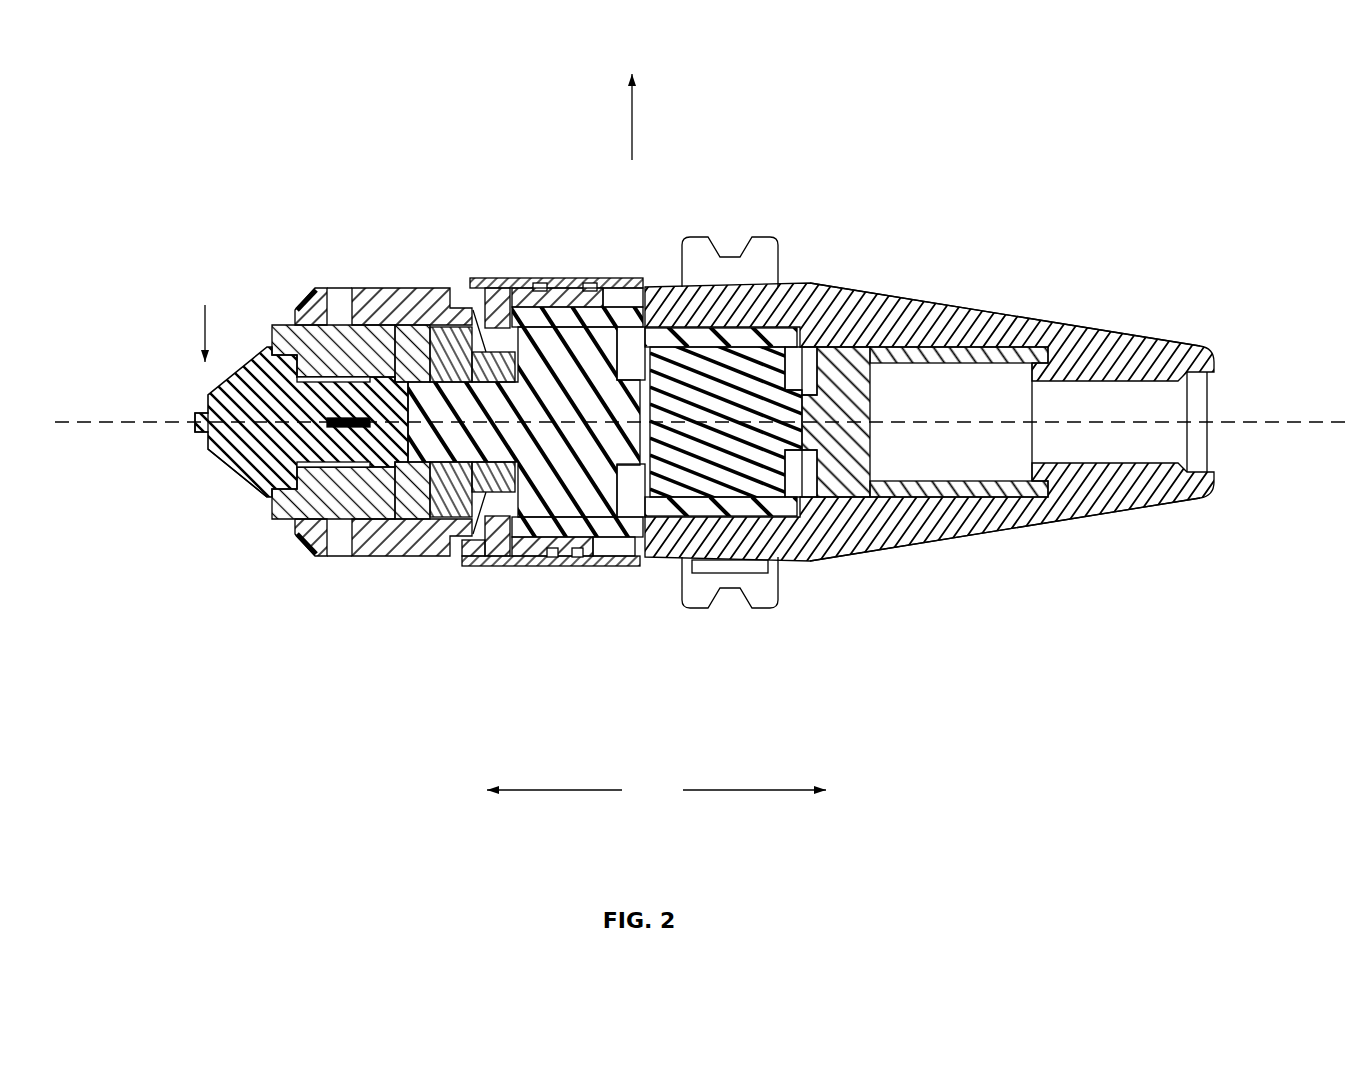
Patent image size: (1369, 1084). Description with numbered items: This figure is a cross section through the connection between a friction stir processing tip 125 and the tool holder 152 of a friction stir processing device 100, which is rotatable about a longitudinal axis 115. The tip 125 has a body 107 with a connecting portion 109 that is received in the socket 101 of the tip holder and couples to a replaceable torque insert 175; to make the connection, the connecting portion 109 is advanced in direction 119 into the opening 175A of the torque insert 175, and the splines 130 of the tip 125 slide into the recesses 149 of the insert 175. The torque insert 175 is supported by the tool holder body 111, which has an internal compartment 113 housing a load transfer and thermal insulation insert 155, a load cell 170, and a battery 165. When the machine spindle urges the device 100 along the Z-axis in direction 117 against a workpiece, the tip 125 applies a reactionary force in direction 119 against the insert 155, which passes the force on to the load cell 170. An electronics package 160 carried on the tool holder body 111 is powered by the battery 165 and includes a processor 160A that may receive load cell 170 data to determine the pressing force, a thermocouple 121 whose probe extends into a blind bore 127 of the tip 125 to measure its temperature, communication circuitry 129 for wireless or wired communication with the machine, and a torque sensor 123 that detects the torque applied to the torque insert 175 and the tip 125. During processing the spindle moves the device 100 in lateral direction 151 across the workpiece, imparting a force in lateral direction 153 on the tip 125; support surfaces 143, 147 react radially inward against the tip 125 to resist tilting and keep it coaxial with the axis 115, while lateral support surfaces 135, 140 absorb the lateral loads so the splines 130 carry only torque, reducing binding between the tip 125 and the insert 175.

The friction stir processing device 100 is at (705, 453).
The socket 101 is at (299, 458).
The body 107 is at (215, 447).
The connecting portion 109 is at (368, 398).
The tool holder body 111 is at (817, 305).
The internal compartment 113 is at (915, 322).
The longitudinal axis 115 is at (1250, 420).
The direction 117 is at (555, 790).
The direction 119 is at (745, 790).
The thermocouple 121 is at (578, 558).
The torque sensor 123 is at (556, 558).
The friction stir processing tip 125 is at (228, 475).
The blind bore 127 is at (372, 428).
The communication circuitry 129 is at (540, 280).
The splines 130 is at (292, 525).
The lateral support surface 135 is at (343, 462).
The lateral support surface 140 is at (295, 378).
The support surface 143 is at (283, 333).
The support surface 147 is at (322, 303).
The recesses 149 is at (318, 358).
The lateral direction 151 is at (632, 132).
The tool holder 152 is at (960, 535).
The lateral direction 153 is at (200, 335).
The load transfer and thermal insulation insert 155 is at (466, 398).
The electronics package 160 is at (527, 550).
The processor 160A is at (590, 280).
The battery 165 is at (962, 410).
The load cell 170 is at (720, 465).
The replaceable torque insert 175 is at (383, 515).
The opening 175A is at (330, 470).